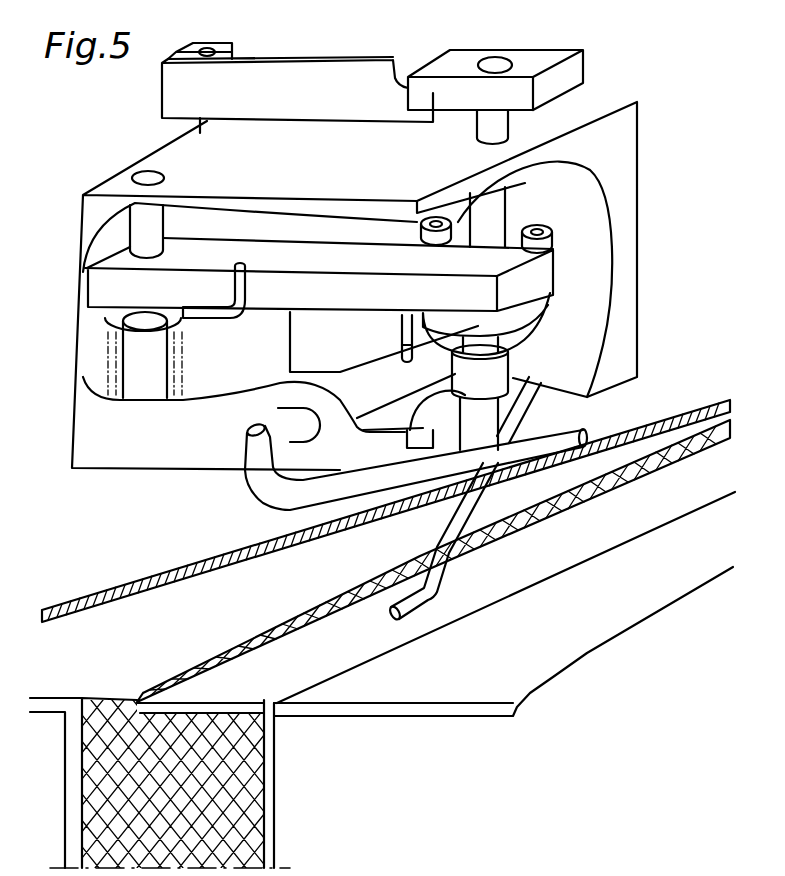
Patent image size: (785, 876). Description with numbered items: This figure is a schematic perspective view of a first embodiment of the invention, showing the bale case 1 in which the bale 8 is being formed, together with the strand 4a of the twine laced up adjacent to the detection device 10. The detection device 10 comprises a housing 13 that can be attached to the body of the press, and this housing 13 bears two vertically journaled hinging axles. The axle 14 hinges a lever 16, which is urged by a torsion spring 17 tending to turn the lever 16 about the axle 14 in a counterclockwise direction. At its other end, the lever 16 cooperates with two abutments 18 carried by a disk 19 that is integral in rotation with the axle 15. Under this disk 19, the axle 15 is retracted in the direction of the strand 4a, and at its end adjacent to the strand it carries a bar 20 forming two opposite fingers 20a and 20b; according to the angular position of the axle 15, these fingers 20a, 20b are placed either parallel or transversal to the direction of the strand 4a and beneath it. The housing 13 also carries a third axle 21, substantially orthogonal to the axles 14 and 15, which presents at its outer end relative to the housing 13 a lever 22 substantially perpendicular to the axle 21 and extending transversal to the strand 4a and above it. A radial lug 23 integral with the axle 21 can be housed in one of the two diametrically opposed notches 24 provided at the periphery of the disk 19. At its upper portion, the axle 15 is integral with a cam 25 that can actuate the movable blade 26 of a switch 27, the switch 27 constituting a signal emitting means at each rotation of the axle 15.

The bale case 1 is at (72, 732).
The strand of the twine 4a is at (125, 600).
The bale 8 is at (507, 540).
The detection device 10 is at (392, 44).
The housing 13 is at (575, 115).
The axle 14 is at (148, 172).
The axle 15 is at (480, 123).
The lever 16 is at (110, 283).
The torsion spring 17 is at (246, 284).
The abutments 18 is at (545, 229).
The disk 19 is at (532, 332).
The bar 20 is at (451, 522).
The finger 20a is at (430, 593).
The finger 20b is at (517, 426).
The third axle 21 is at (285, 465).
The lever 22 is at (560, 447).
The radial lug 23 is at (402, 320).
The notches 24 is at (403, 344).
The cam 25 is at (537, 60).
The movable blade 26 is at (325, 80).
The switch 27 is at (218, 42).